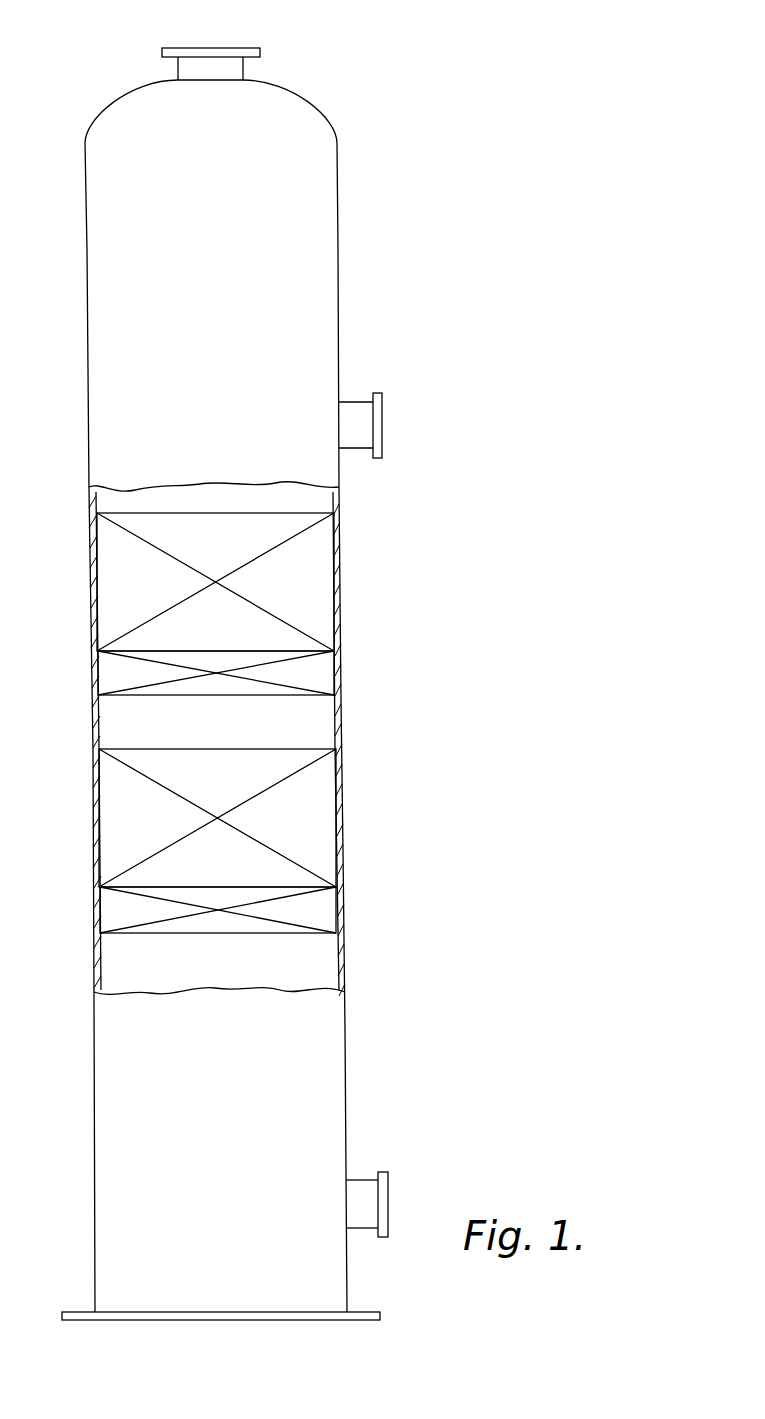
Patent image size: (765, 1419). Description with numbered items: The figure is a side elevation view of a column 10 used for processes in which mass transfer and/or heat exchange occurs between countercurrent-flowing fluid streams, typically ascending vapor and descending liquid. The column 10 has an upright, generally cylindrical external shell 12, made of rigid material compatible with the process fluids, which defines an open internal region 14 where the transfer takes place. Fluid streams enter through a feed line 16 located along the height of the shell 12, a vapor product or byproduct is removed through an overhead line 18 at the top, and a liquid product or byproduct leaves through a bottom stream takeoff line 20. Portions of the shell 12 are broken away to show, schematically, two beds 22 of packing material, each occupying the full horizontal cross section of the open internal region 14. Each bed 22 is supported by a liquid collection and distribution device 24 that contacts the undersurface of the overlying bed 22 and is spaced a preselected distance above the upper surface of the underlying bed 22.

The column 10 is at (323, 111).
The external shell 12 is at (340, 735).
The open internal region 14 is at (323, 715).
The feed line 16 is at (357, 402).
The overhead line 18 is at (233, 46).
The bottom stream takeoff line 20 is at (365, 1180).
The bed of packing material 22 is at (323, 580).
The liquid collection and distribution device 24 is at (323, 673).